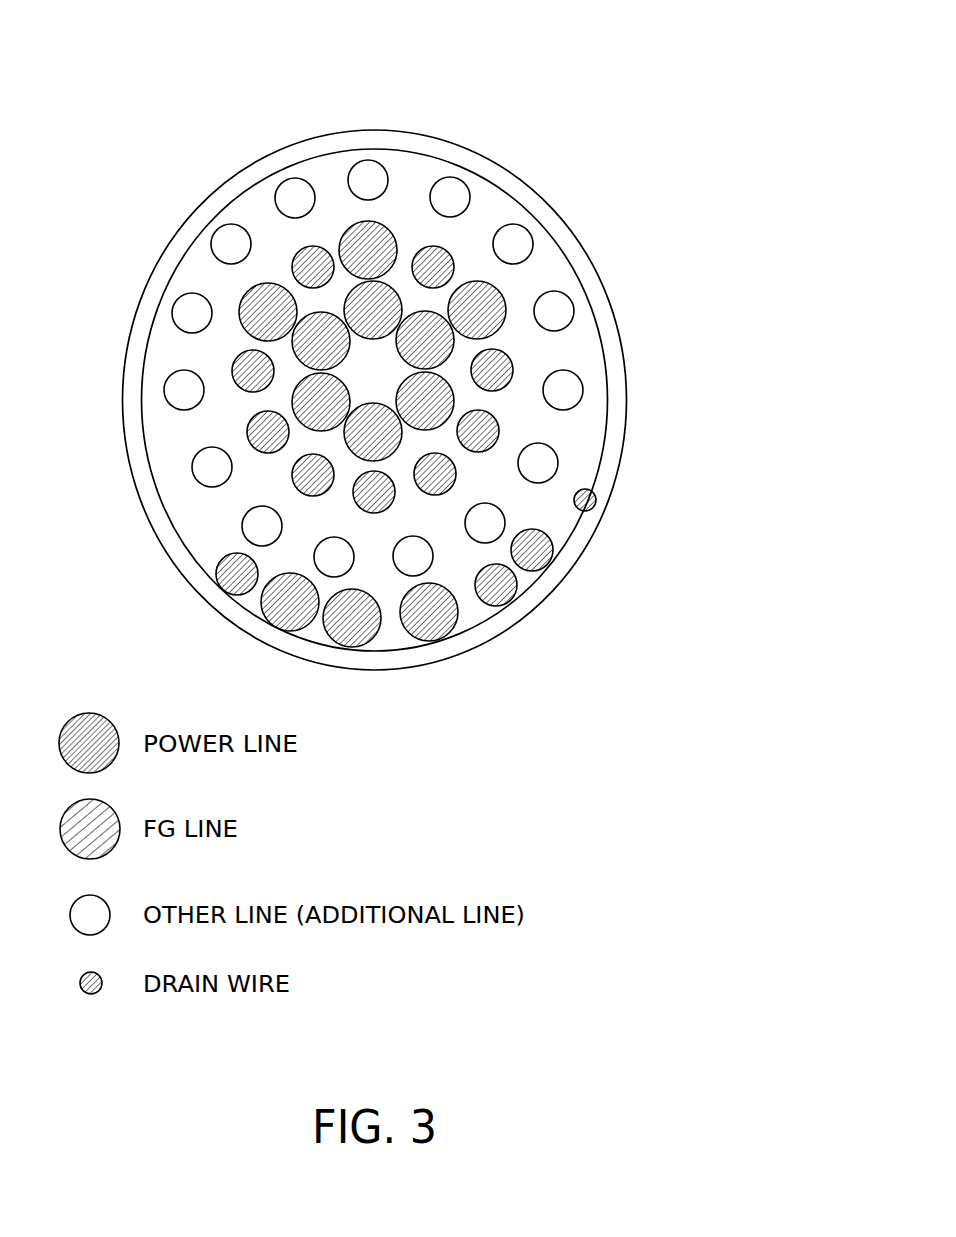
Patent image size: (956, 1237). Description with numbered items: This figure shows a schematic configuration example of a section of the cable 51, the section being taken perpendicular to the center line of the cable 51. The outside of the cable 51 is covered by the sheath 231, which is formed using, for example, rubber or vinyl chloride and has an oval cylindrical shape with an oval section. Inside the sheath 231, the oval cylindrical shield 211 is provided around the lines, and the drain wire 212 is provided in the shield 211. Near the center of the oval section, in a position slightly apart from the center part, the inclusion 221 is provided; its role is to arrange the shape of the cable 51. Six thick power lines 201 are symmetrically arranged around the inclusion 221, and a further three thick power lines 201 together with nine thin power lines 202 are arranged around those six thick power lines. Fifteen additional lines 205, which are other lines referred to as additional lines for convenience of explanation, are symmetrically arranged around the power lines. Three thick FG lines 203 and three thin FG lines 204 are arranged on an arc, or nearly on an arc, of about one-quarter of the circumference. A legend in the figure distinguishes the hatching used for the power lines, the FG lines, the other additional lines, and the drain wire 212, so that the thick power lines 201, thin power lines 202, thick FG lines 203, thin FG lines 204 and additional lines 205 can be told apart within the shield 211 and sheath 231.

The cable 51 is at (541, 92).
The thick power line 201 is at (380, 237).
The thin power line 202 is at (437, 247).
The thick FG line 203 is at (442, 628).
The thin FG line 204 is at (507, 593).
The additional line 205 is at (292, 200).
The shield 211 is at (572, 530).
The drain wire 212 is at (593, 493).
The inclusion 221 is at (363, 368).
The sheath 231 is at (595, 271).